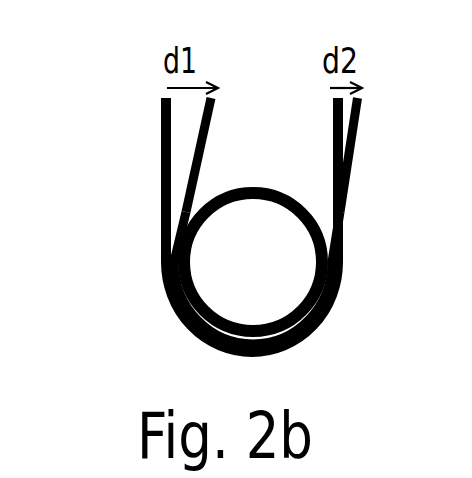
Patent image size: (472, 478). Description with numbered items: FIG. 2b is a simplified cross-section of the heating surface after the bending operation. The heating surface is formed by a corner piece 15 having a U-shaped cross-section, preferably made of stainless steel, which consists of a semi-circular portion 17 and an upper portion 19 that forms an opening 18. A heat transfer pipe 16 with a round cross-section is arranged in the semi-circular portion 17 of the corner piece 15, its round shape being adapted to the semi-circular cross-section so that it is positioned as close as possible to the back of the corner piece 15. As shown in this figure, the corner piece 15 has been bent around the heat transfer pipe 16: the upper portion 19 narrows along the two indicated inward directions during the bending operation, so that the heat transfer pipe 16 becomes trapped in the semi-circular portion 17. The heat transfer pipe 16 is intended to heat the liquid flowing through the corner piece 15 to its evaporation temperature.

The corner piece 15 is at (356, 163).
The heat transfer pipe 16 is at (340, 293).
The semi-circular portion 17 is at (140, 217).
The opening 18 is at (238, 115).
The upper portion 19 is at (138, 92).